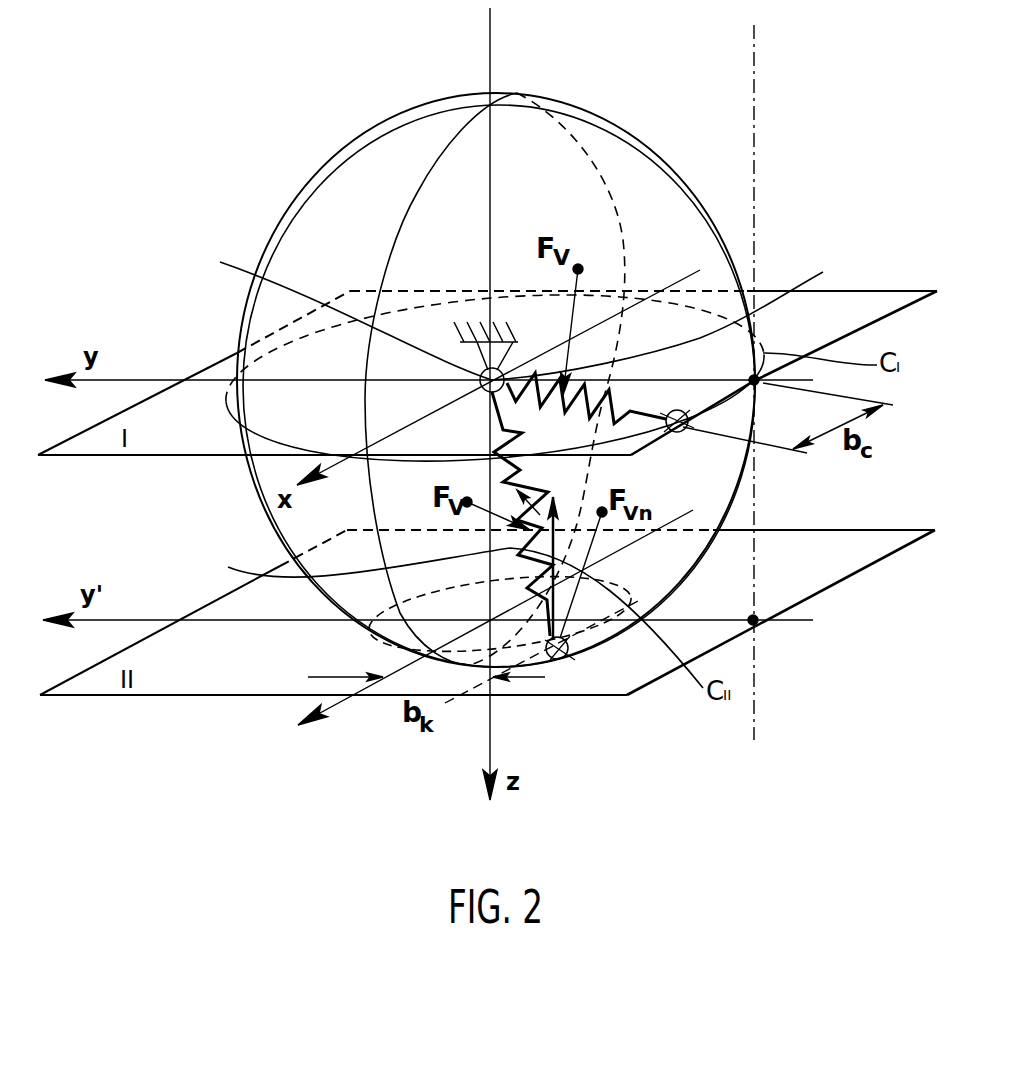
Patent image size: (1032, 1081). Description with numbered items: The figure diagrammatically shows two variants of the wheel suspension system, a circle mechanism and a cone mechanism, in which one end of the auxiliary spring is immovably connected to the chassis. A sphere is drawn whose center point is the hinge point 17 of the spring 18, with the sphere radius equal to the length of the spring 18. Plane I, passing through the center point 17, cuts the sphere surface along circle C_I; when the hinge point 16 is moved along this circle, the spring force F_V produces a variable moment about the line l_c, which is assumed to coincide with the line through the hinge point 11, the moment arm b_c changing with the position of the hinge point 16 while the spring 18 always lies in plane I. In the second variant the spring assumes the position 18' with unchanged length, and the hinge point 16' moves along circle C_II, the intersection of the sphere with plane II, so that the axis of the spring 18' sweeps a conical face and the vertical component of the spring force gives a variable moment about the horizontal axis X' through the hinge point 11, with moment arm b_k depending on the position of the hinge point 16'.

The hinge point 11 is at (567, 395).
The hinge point 16 is at (734, 465).
The hinge point 16' is at (588, 662).
The hinge point 17 is at (338, 312).
The spring 18 is at (672, 317).
The spring 18' is at (448, 618).